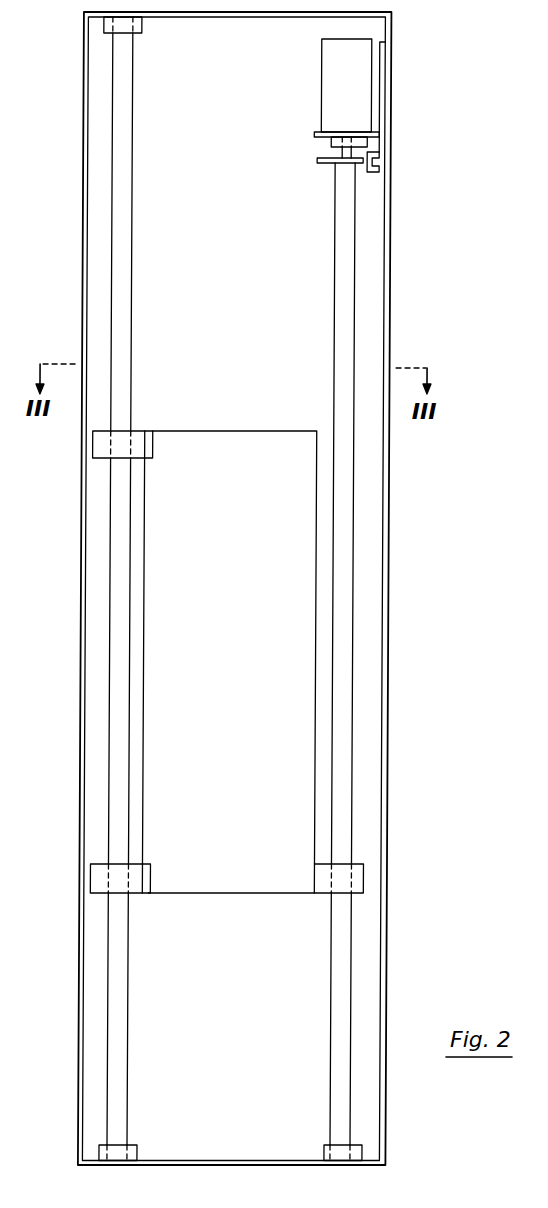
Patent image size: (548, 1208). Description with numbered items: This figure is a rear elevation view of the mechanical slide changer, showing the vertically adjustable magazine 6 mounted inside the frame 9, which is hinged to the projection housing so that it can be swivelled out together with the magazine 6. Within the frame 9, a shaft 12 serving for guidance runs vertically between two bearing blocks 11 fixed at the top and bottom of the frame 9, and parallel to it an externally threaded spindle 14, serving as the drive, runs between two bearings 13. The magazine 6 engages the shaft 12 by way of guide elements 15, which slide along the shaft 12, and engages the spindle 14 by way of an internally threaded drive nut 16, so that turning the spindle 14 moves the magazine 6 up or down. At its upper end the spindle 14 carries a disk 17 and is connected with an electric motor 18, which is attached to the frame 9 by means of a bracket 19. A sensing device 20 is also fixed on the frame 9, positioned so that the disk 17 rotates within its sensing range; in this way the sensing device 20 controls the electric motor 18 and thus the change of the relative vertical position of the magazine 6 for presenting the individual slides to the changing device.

The magazine 6 is at (298, 750).
The frame 9 is at (386, 616).
The bearing blocks 11 is at (104, 25).
The shaft 12 is at (122, 992).
The bearings 13 is at (368, 143).
The spindle 14 is at (346, 494).
The guide elements 15 is at (100, 447).
The drive nut 16 is at (368, 880).
The disk 17 is at (328, 158).
The electric motor 18 is at (360, 78).
The bracket 19 is at (345, 135).
The sensing device 20 is at (381, 165).